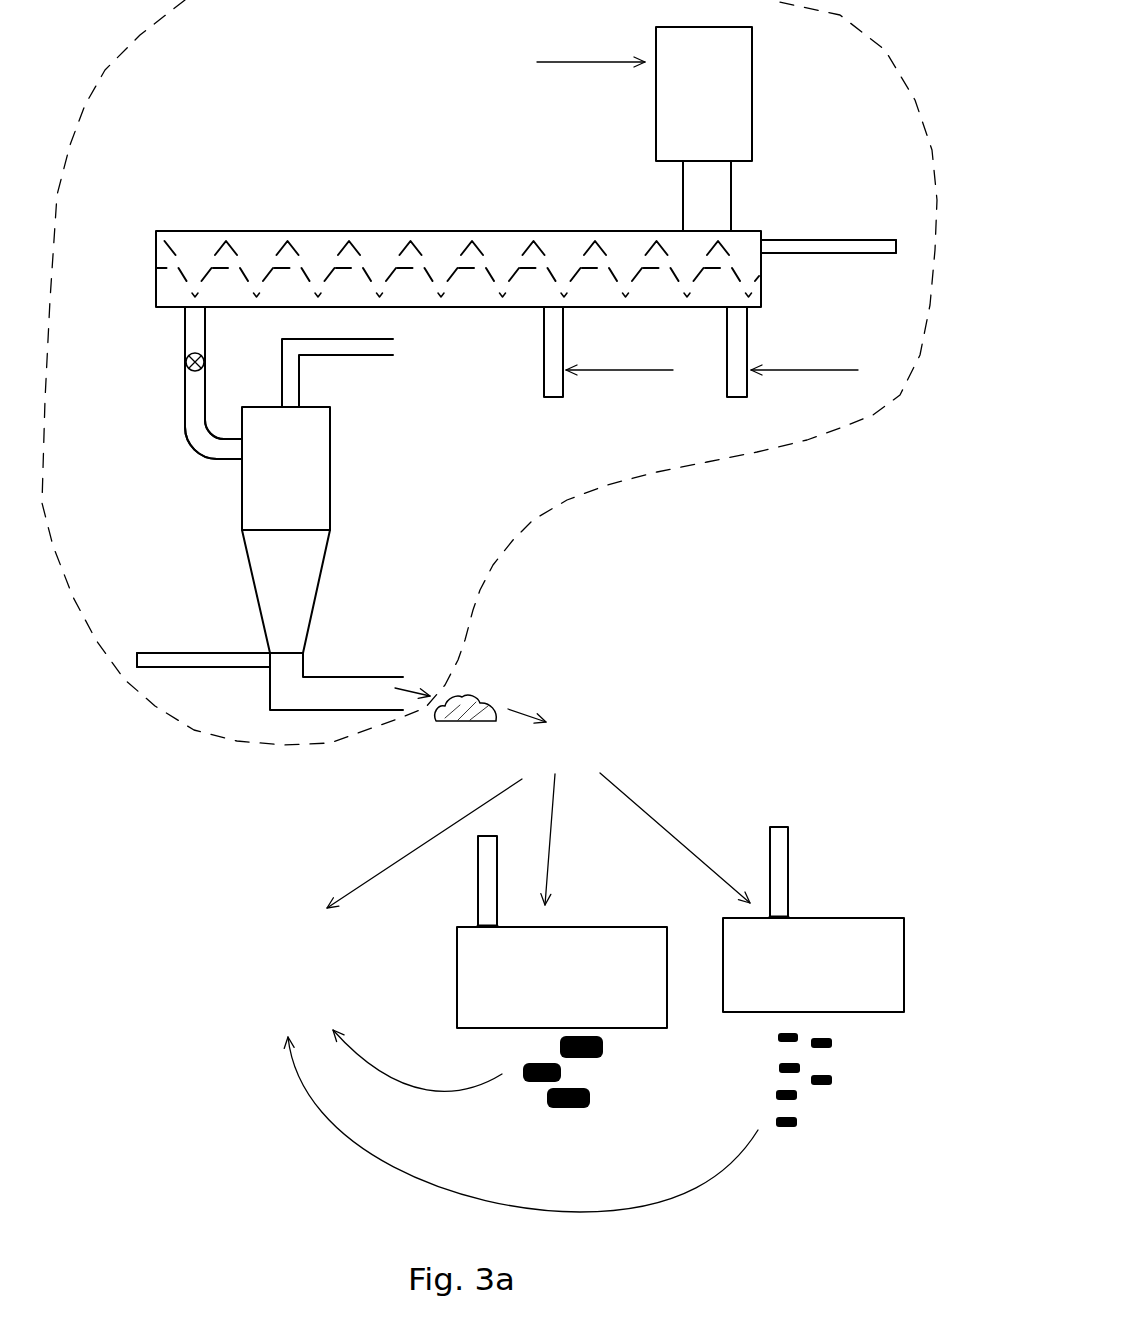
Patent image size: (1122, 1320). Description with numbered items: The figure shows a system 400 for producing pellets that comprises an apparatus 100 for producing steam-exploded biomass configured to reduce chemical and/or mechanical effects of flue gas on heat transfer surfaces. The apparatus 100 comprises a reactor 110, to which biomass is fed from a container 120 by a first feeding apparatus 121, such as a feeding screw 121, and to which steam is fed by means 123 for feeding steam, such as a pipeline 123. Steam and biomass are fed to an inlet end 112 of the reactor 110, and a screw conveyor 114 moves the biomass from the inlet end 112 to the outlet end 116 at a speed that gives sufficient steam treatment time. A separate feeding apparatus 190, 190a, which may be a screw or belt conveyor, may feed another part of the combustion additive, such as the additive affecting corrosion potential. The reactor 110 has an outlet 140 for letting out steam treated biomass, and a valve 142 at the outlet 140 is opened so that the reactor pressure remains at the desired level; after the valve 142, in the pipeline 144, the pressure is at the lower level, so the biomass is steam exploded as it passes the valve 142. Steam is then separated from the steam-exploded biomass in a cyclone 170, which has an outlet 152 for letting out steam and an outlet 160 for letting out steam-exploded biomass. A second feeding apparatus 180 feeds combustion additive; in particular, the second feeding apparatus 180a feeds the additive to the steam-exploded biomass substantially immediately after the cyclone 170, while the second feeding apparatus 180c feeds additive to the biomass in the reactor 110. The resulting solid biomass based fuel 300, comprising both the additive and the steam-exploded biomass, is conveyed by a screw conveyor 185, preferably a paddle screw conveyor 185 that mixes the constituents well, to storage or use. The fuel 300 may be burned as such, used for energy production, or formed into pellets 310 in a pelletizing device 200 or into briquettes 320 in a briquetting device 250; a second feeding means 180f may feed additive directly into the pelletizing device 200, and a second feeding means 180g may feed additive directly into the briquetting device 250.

The apparatus for producing steam-exploded biomass 100 is at (176, 714).
The reactor 110 is at (372, 243).
The inlet end 112 is at (540, 200).
The screw conveyor 114 is at (275, 240).
The outlet end 116 is at (180, 200).
The container 120 is at (724, 98).
The feeding screw 121 is at (692, 196).
The pipeline for feeding steam 123 is at (550, 369).
The outlet 140 is at (192, 316).
The valve 142 is at (186, 362).
The pipeline 144 is at (194, 392).
The outlet for letting out steam 152 is at (370, 358).
The outlet for letting out steam-exploded biomass 160 is at (280, 650).
The cyclone 170 is at (310, 485).
The second feeding apparatus 180 is at (186, 602).
The second feeding apparatus 180a is at (165, 657).
The second feeding apparatus 180c is at (735, 382).
The second feeding means 180f is at (778, 836).
The second feeding means 180g is at (486, 856).
The screw conveyor 185 is at (365, 707).
The separate feeding apparatus 190 is at (857, 247).
The separate feeding apparatus 190a is at (848, 211).
The pelletizing device 200 is at (815, 918).
The briquetting device 250 is at (575, 927).
The solid biomass based fuel 300 is at (467, 700).
The pellets 310 is at (797, 1125).
The briquettes 320 is at (573, 1110).
The system for producing pellets 400 is at (145, 1065).